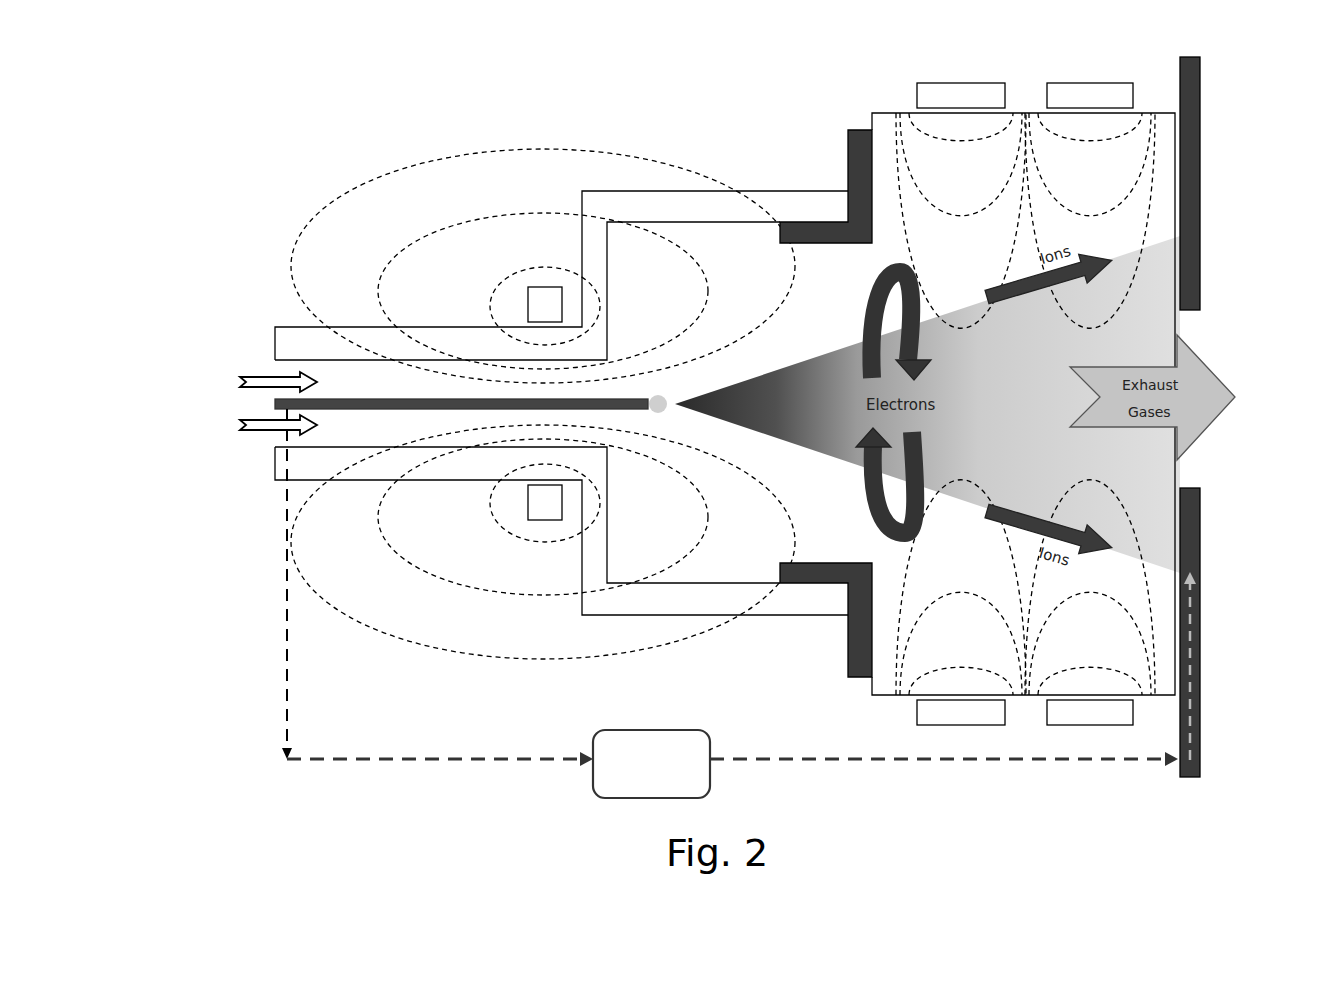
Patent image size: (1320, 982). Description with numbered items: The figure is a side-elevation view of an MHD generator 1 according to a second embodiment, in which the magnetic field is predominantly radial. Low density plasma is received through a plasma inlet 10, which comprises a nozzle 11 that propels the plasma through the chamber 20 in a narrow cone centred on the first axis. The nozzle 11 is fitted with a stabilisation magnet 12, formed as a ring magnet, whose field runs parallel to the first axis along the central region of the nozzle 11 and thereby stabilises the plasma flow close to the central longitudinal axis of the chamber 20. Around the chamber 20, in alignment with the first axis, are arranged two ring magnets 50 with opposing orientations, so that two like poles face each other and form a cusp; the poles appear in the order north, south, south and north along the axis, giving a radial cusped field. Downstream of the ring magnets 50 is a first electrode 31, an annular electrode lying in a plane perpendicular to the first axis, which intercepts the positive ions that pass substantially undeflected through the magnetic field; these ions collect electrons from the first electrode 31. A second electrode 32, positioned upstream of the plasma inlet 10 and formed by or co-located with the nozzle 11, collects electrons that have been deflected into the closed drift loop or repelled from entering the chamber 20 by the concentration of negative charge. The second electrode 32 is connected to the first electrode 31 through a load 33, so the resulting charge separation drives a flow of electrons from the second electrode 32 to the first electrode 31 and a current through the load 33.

The MHD generator 1 is at (185, 176).
The plasma inlet 10 is at (265, 358).
The nozzle 11 is at (640, 395).
The stabilisation magnet 12 is at (528, 298).
The chamber 20 is at (840, 297).
The first electrode 31 is at (1202, 145).
The second electrode 32 is at (272, 404).
The load 33 is at (592, 760).
The ring magnets 50 is at (1100, 80).